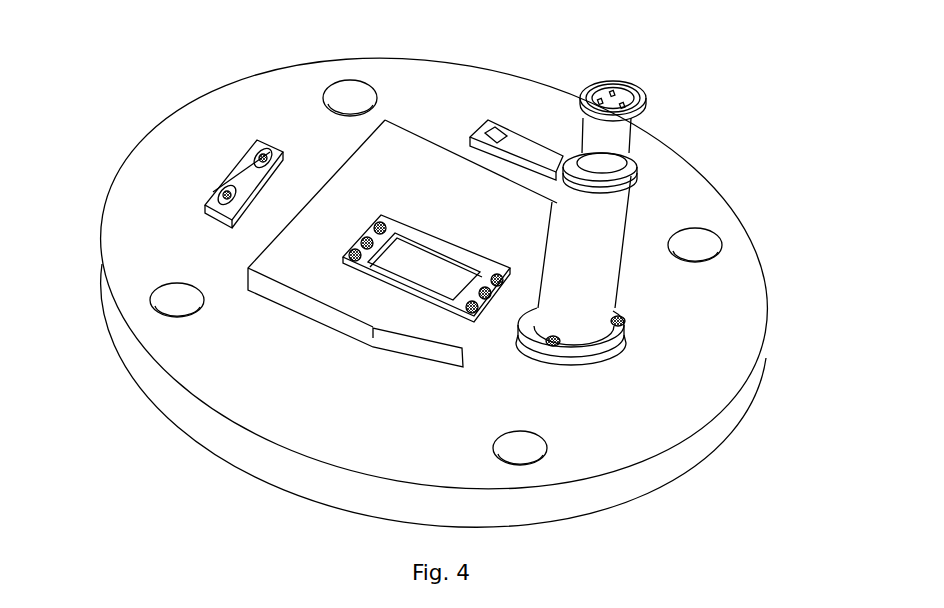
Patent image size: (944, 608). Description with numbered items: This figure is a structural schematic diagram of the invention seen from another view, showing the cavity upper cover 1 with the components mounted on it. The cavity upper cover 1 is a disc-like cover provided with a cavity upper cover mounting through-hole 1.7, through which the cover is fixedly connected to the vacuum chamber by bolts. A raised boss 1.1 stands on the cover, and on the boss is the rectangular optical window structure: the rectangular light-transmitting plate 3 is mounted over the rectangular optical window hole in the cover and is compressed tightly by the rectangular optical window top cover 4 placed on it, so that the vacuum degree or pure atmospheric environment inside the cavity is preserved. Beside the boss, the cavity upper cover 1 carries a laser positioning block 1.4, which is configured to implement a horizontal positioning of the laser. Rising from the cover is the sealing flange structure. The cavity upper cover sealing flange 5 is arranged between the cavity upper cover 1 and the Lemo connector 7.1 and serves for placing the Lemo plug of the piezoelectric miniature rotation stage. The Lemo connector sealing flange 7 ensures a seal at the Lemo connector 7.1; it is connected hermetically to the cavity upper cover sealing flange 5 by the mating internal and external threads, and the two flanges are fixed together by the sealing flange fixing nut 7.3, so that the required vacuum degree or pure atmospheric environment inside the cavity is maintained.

The cavity upper cover 1 is at (627, 402).
The boss 1.1 is at (357, 178).
The laser positioning block 1.4 is at (258, 170).
The cavity upper cover mounting through-hole 1.7 is at (353, 95).
The rectangular light-transmitting plate 3 is at (405, 262).
The rectangular optical window top cover 4 is at (470, 297).
The cavity upper cover sealing flange 5 is at (597, 275).
The Lemo connector sealing flange 7 is at (614, 156).
The Lemo connector 7.1 is at (630, 87).
The sealing flange fixing nut 7.3 is at (629, 176).